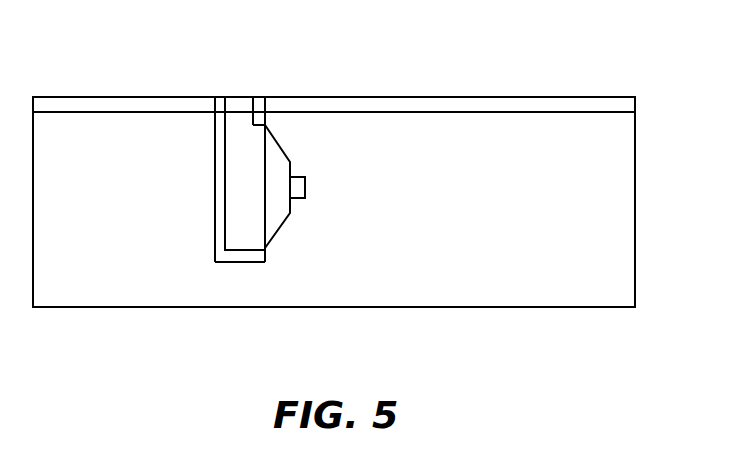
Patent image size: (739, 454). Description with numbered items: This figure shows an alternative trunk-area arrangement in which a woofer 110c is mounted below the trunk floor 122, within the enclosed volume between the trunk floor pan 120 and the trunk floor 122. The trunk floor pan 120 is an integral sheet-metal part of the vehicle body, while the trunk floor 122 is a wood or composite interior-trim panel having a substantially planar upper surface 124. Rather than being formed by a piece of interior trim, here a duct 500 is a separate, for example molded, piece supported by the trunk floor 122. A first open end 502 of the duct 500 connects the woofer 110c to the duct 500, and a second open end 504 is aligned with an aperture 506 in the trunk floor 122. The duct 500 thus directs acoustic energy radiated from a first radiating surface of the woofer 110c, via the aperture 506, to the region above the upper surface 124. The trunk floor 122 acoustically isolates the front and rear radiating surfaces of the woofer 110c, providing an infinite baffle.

The trunk floor pan 120 is at (495, 307).
The trunk floor 122 is at (600, 107).
The upper surface 124 is at (457, 94).
The duct 500 is at (220, 176).
The first open end 502 is at (254, 229).
The second open end 504 is at (217, 94).
The aperture 506 is at (245, 94).
The woofer 110c is at (284, 135).